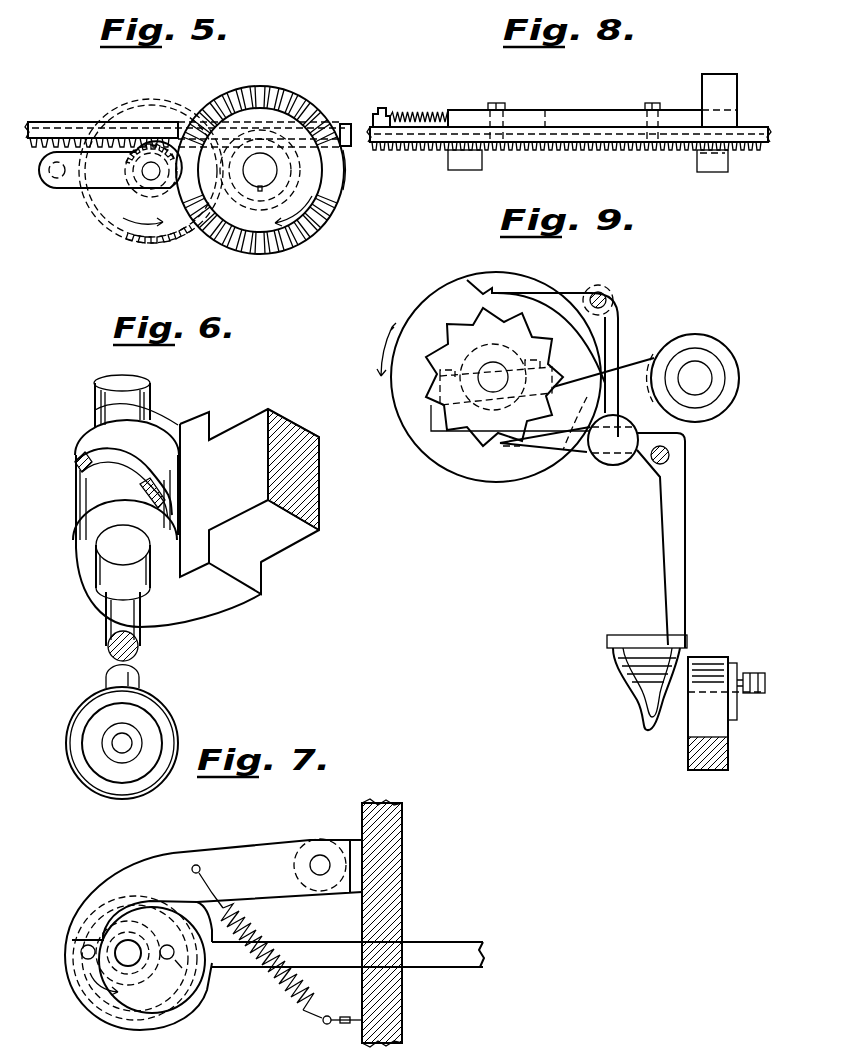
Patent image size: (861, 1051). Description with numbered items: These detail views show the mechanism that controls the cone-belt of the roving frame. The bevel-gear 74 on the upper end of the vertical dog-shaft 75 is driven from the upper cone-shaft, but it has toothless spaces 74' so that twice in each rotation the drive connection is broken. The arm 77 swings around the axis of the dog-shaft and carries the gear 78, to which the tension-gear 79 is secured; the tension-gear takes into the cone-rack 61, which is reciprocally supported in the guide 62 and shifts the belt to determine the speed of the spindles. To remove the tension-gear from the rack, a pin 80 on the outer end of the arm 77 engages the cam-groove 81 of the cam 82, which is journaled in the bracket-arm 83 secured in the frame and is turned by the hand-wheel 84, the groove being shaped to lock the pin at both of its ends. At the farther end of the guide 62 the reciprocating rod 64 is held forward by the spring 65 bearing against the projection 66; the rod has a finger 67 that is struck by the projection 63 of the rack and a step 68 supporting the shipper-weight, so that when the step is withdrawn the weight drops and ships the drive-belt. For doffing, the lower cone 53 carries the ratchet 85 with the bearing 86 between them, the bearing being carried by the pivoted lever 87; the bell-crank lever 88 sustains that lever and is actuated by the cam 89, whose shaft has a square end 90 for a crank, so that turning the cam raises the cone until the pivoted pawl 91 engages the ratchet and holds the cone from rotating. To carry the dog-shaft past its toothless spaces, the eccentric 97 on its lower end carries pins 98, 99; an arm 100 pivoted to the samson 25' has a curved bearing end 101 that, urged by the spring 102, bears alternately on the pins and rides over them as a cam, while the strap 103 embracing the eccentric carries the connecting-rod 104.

In FIG. 5, the cone-rack 61 is at (30, 148).
In FIG. 8, the cone-rack 61 is at (766, 150).
In FIG. 5, the guide 62 is at (66, 126).
In FIG. 8, the guide 62 is at (752, 127).
In FIG. 8, the projection 63 is at (715, 170).
In FIG. 8, the reciprocating rod 64 is at (586, 110).
In FIG. 8, the spring 65 is at (418, 112).
In FIG. 8, the projection 66 is at (378, 108).
In FIG. 8, the finger 67 is at (465, 165).
In FIG. 8, the step 68 is at (737, 90).
In FIG. 5, the bevel-gear 74 is at (260, 166).
In FIG. 5, the spaces 74' is at (253, 188).
In FIG. 5, the dog-shaft 75 is at (260, 172).
In FIG. 7, the dog-shaft 75 is at (130, 966).
In FIG. 5, the arm 77 is at (75, 188).
In FIG. 5, the gear 78 is at (176, 242).
In FIG. 5, the tension-gear 79 is at (130, 155).
In FIG. 5, the pin 80 is at (53, 176).
In FIG. 6, the pin 80 is at (76, 458).
In FIG. 6, the cam-groove 81 is at (128, 468).
In FIG. 6, the cam 82 is at (78, 497).
In FIG. 6, the bracket-arm 83 is at (249, 501).
In FIG. 6, the hand-wheel 84 is at (150, 695).
In FIG. 9, the ratchet 85 is at (447, 339).
In FIG. 9, the bearing 86 is at (484, 346).
In FIG. 9, the lever 87 is at (619, 393).
In FIG. 9, the bell-crank lever 88 is at (685, 550).
In FIG. 9, the cam 89 is at (641, 678).
In FIG. 9, the square end 90 is at (752, 695).
In FIG. 9, the pawl 91 is at (619, 340).
In FIG. 9, the lower cone 53 is at (513, 482).
In FIG. 7, the eccentric 97 is at (177, 966).
In FIG. 7, the pin 98 is at (81, 955).
In FIG. 7, the pin 99 is at (168, 944).
In FIG. 7, the arm 100 is at (267, 870).
In FIG. 7, the curved bearing end 101 is at (93, 930).
In FIG. 7, the spring 102 is at (268, 925).
In FIG. 7, the strap 103 is at (88, 1013).
In FIG. 7, the connecting-rod 104 is at (348, 954).
In FIG. 7, the samson 25' is at (403, 923).